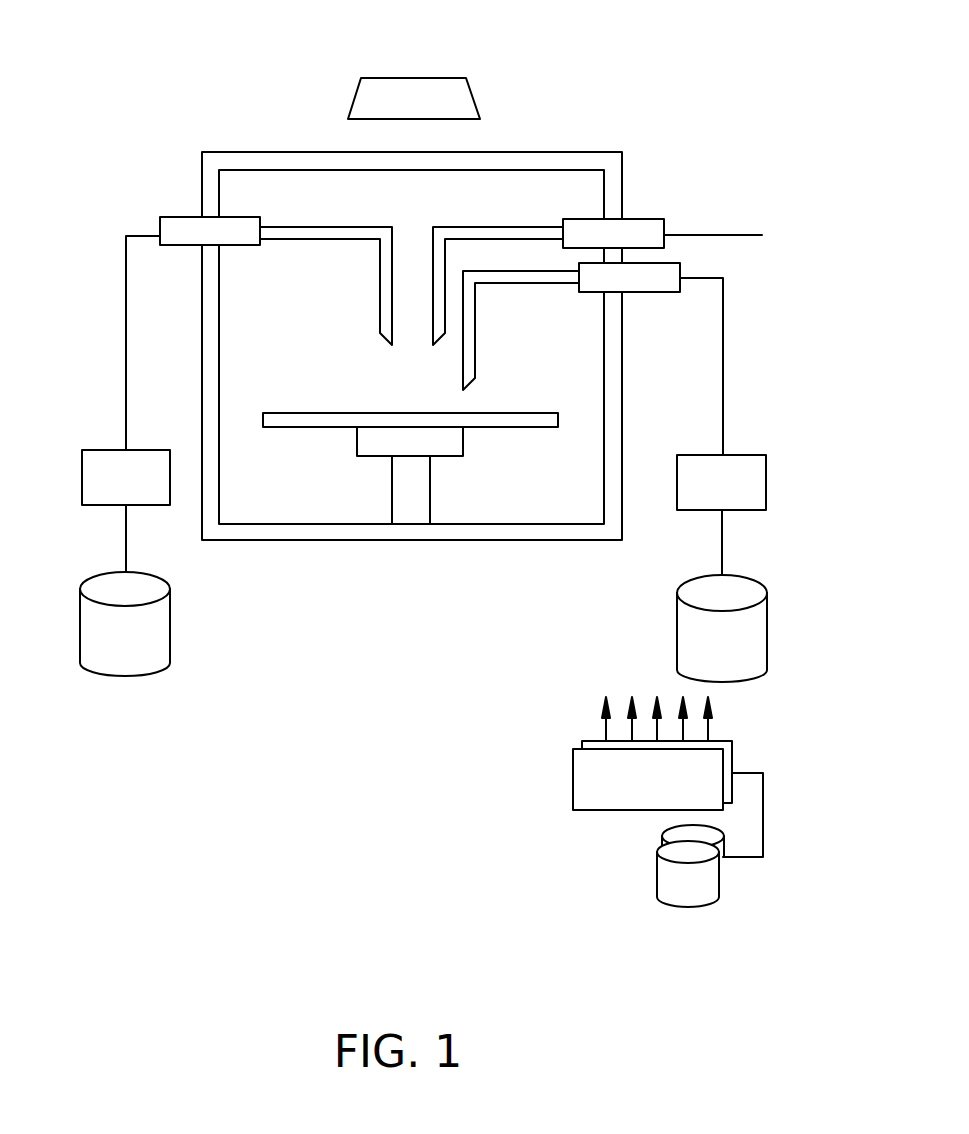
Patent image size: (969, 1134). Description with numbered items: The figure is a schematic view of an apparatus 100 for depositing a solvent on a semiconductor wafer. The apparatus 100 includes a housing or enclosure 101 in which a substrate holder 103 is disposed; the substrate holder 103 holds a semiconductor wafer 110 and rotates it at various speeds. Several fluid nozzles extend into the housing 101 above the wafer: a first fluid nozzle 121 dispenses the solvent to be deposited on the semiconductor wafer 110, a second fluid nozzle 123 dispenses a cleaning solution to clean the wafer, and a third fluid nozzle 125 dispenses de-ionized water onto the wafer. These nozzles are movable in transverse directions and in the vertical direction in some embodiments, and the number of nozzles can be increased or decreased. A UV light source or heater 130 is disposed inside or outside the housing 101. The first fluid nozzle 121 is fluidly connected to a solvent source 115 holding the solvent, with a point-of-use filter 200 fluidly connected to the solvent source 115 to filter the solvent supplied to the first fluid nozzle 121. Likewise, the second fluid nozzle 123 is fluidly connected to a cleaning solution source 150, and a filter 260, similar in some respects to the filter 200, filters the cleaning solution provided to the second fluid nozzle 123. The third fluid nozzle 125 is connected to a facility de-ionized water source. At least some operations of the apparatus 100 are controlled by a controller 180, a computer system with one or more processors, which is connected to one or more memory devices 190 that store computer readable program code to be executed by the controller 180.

The apparatus 100 is at (148, 160).
The housing 101 is at (548, 530).
The substrate holder 103 is at (412, 443).
The semiconductor wafer 110 is at (296, 428).
The solvent source 115 is at (722, 628).
The first fluid nozzle 121 is at (528, 252).
The second fluid nozzle 123 is at (308, 198).
The third fluid nozzle 125 is at (485, 195).
The UV light source or heater 130 is at (417, 86).
The cleaning solution source 150 is at (125, 624).
The controller 180 is at (596, 795).
The memory device 190 is at (688, 895).
The filter 200 is at (664, 397).
The filter 260 is at (171, 394).